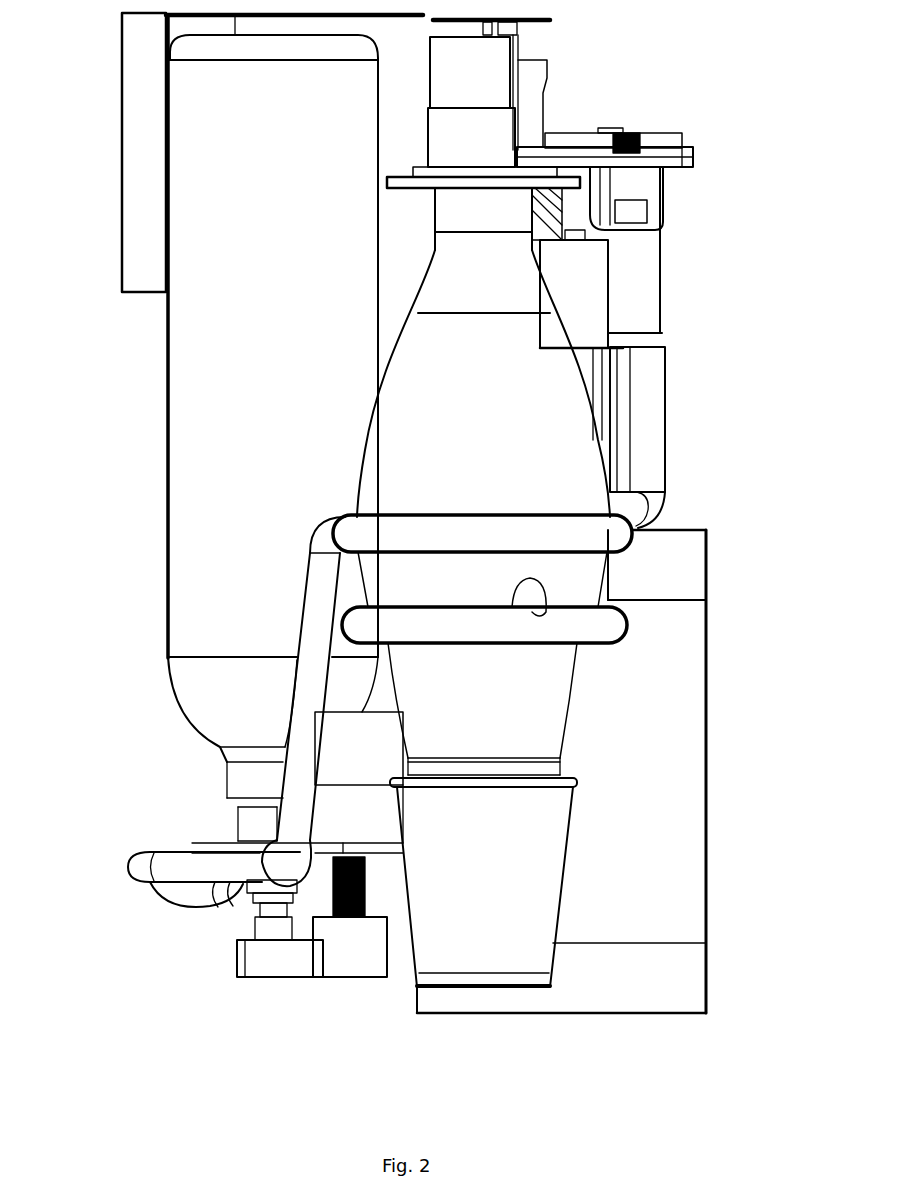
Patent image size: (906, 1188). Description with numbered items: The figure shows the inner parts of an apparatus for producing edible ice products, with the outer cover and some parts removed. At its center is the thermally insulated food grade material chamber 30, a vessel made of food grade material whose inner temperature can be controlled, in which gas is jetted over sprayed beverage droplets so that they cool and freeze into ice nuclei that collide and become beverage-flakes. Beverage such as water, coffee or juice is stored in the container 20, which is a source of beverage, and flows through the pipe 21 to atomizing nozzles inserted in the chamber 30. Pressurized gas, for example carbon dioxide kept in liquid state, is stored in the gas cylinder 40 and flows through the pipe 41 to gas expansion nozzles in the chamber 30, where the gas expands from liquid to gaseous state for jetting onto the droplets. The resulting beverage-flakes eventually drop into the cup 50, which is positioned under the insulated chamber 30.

The container 20 is at (612, 717).
The pipe 21 is at (633, 627).
The thermally insulated food grade material chamber 30 is at (553, 432).
The gas cylinder 40 is at (205, 298).
The pipe 41 is at (173, 860).
The cup 50 is at (527, 873).